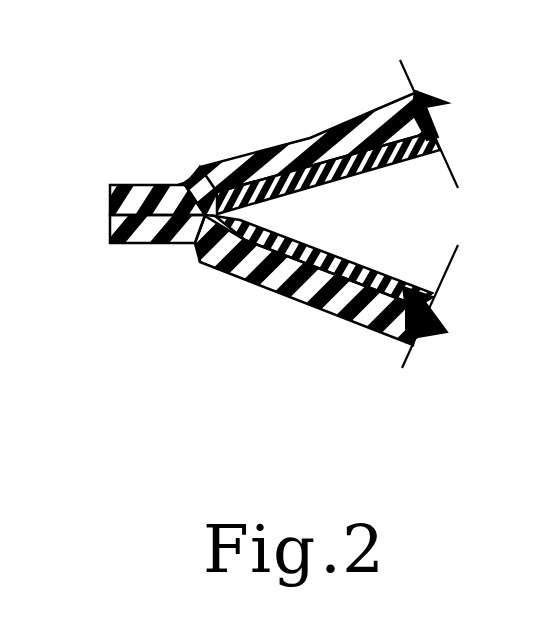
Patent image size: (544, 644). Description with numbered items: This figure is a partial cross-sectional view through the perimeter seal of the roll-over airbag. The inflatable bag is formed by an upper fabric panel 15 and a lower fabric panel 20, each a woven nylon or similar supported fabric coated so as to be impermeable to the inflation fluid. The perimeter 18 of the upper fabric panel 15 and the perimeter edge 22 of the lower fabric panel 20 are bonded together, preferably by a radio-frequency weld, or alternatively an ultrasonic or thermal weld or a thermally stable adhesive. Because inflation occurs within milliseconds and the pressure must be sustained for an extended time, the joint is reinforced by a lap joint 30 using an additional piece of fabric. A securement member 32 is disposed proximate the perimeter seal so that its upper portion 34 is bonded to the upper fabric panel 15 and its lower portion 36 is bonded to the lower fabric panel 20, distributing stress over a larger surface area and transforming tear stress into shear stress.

The upper fabric panel 15 is at (205, 166).
The perimeter 18 is at (132, 185).
The perimeter edge 22 is at (130, 244).
The securement member 32 is at (303, 166).
The lap joint 30 is at (300, 201).
The upper portion 34 is at (390, 160).
The lower portion 36 is at (385, 268).
The lower fabric panel 20 is at (216, 266).